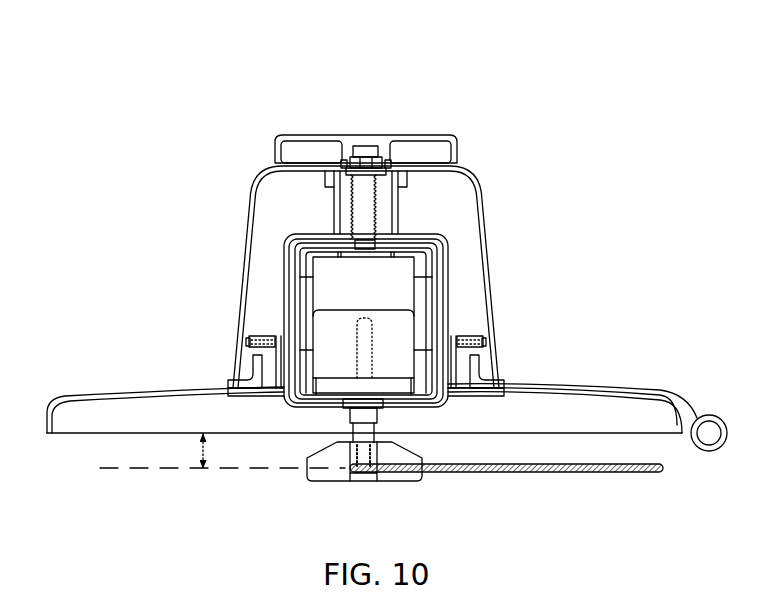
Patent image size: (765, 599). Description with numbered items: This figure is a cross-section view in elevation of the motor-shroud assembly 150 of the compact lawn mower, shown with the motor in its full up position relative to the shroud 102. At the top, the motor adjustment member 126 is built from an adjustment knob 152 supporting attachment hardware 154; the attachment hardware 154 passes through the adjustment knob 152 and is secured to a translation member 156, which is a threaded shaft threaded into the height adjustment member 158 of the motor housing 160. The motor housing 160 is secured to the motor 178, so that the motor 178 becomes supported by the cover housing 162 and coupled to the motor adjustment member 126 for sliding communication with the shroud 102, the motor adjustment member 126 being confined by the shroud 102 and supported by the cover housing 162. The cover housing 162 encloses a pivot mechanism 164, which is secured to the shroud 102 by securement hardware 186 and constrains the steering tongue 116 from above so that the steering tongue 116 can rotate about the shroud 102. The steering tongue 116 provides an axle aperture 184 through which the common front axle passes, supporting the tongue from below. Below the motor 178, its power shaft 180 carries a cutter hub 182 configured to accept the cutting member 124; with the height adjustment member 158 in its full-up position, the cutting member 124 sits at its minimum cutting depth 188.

The shroud 102 is at (147, 390).
The steering tongue 116 is at (585, 383).
The cutting member 124 is at (483, 474).
The motor adjustment member 126 is at (275, 122).
The motor-shroud assembly 150 is at (364, 286).
The adjustment knob 152 is at (450, 136).
The attachment hardware 154 is at (362, 142).
The translation member 156 is at (363, 208).
The height adjustment member 158 is at (340, 212).
The motor housing 160 is at (428, 260).
The cover housing 162 is at (492, 257).
The pivot mechanism 164 is at (464, 333).
The motor 178 is at (335, 330).
The power shaft 180 is at (373, 410).
The cutter hub 182 is at (323, 460).
The axle aperture 184 is at (709, 430).
The securement hardware 186 is at (247, 345).
The minimum cutting depth 188 is at (197, 449).